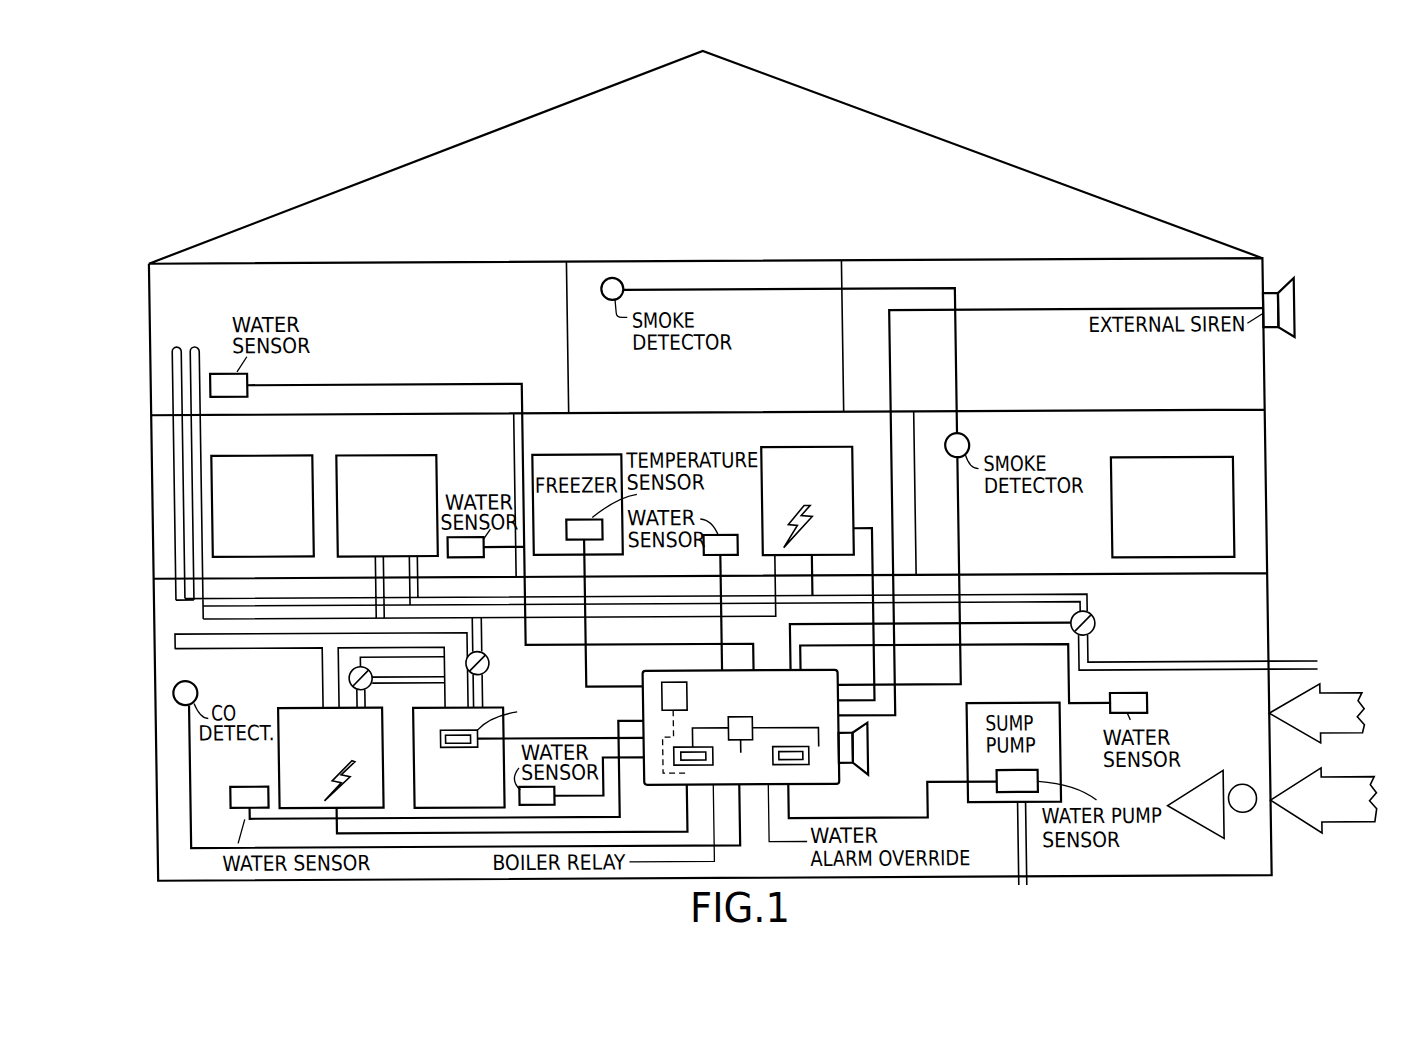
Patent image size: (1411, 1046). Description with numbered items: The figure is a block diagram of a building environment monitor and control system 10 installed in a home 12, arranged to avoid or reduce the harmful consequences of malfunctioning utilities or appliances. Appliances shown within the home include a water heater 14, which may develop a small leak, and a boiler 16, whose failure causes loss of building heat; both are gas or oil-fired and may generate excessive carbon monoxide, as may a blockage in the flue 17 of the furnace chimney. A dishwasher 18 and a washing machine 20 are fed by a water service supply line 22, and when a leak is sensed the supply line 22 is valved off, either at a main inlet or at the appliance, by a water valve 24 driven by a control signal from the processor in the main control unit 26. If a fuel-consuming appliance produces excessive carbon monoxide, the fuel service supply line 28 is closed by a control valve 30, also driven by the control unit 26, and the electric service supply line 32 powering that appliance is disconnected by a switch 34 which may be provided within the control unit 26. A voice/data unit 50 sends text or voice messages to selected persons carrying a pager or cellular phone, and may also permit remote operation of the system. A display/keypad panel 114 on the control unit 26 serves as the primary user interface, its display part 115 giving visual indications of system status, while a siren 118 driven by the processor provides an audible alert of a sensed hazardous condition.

The monitor and control system 10 is at (742, 464).
The home 12 is at (1154, 215).
The water heater 14 is at (437, 806).
The boiler 16 is at (279, 760).
The flue 17 is at (176, 632).
The dishwasher 18 is at (838, 450).
The washing machine 20 is at (440, 466).
The water service supply line 22 is at (1258, 675).
The water valve 24 is at (1098, 619).
The main control unit 26 is at (897, 756).
The fuel service supply line 28 is at (1355, 813).
The control valve 30 is at (1244, 815).
The electric service supply line 32 is at (1352, 701).
The switch 34 is at (751, 720).
The voice/data unit 50 is at (767, 767).
The display/keypad panel 114 is at (728, 705).
The display part 115 is at (795, 765).
The siren 118 is at (872, 732).